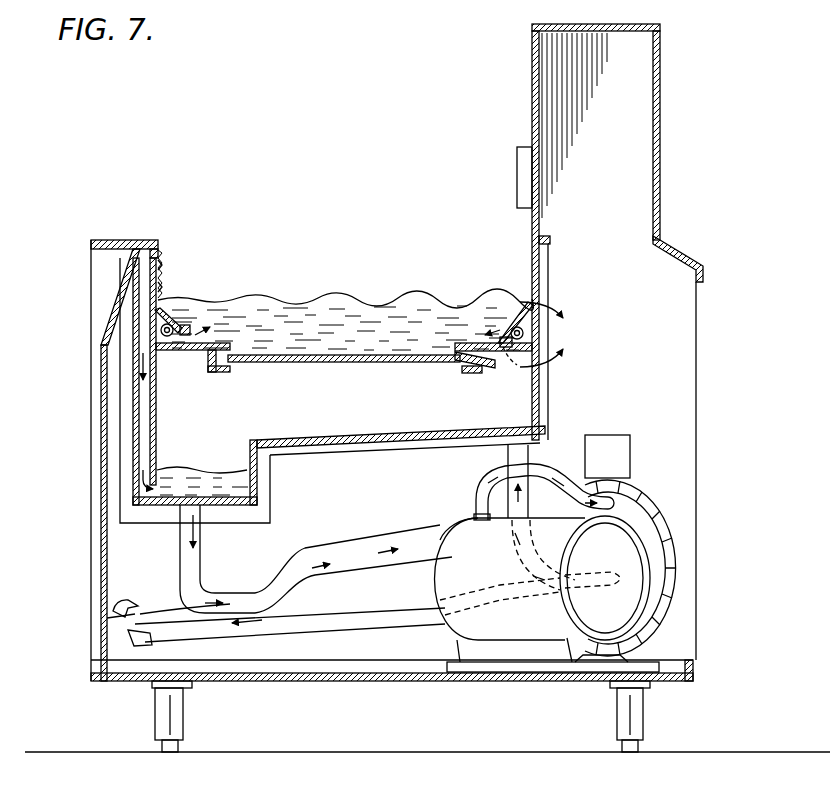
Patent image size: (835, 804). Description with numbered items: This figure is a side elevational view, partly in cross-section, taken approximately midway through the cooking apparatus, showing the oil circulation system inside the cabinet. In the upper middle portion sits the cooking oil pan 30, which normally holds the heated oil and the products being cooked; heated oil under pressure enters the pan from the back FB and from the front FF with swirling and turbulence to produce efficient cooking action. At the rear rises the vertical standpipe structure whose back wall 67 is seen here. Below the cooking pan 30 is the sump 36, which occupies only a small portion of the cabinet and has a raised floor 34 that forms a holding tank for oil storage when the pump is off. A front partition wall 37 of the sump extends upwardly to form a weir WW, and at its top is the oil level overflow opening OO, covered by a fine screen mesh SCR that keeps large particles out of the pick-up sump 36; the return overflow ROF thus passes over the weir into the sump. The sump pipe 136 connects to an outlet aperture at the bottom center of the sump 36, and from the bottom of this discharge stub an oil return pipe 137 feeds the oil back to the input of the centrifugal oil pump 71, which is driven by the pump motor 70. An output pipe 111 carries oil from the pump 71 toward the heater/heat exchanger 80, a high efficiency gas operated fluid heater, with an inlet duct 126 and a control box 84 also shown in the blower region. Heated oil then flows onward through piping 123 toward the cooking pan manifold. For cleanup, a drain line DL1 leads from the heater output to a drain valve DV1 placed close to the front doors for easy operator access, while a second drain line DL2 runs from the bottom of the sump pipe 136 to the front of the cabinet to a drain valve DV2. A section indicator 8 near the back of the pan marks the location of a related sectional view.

The back wall 67 is at (661, 153).
The front partition wall 37 is at (157, 420).
The sump 36 is at (221, 500).
The cooking oil pan 30 is at (331, 345).
The raised floor 34 is at (356, 440).
The front oil flow FF is at (204, 343).
The back oil flow FB is at (490, 337).
The section line 8 is at (544, 334).
The screen mesh SCR is at (163, 264).
The oil level overflow opening OO is at (170, 274).
The weir WW is at (168, 282).
The return overflow ROF is at (152, 370).
The sump pipe 136 is at (182, 527).
The oil return pipe 137 is at (377, 532).
The drain line DL1 is at (295, 628).
The drain line DL2 is at (162, 616).
The drain valve DV1 is at (128, 638).
The drain valve DV2 is at (112, 620).
The pump motor 70 is at (486, 571).
The oil pump 71 is at (448, 523).
The heater/heat exchanger 80 is at (672, 505).
The piping 123 is at (576, 536).
The control box 84 is at (620, 467).
The vertical duct 126 is at (515, 460).
The output pipe 111 is at (555, 449).